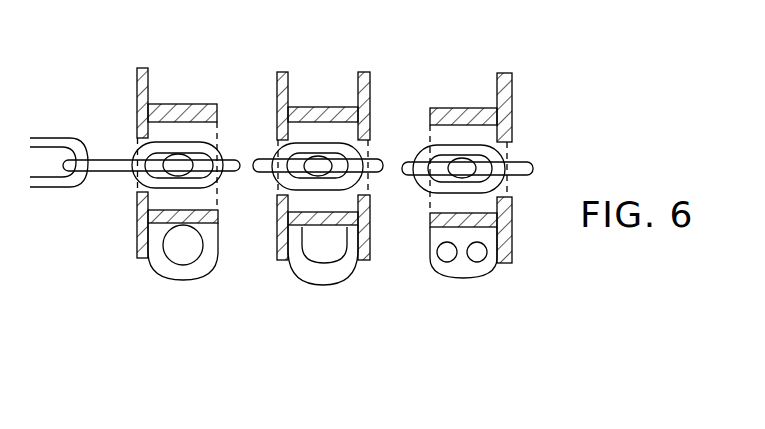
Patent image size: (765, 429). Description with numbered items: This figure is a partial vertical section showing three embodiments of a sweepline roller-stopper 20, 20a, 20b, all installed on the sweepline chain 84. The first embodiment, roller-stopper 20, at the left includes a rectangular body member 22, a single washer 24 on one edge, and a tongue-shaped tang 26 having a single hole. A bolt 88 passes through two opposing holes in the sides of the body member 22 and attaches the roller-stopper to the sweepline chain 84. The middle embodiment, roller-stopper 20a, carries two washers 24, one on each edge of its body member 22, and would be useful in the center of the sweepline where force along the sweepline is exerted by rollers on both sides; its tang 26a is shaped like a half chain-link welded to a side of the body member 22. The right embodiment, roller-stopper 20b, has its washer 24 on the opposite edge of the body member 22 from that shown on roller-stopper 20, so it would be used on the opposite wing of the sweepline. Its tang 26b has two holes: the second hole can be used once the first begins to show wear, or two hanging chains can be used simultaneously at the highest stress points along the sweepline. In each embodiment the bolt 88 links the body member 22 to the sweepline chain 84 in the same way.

The roller-stopper 20 is at (173, 326).
The roller-stopper 20a is at (324, 321).
The roller-stopper 20b is at (463, 315).
The body member 22 is at (197, 103).
The washer 24 is at (137, 90).
The tang 26 is at (150, 262).
The tang 26a is at (296, 280).
The tang 26b is at (432, 270).
The sweepline chain 84 is at (47, 188).
The bolt 88 is at (150, 155).